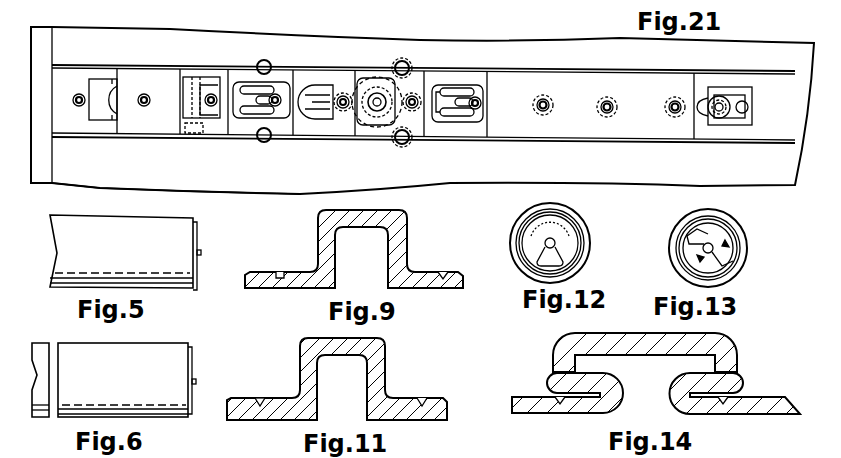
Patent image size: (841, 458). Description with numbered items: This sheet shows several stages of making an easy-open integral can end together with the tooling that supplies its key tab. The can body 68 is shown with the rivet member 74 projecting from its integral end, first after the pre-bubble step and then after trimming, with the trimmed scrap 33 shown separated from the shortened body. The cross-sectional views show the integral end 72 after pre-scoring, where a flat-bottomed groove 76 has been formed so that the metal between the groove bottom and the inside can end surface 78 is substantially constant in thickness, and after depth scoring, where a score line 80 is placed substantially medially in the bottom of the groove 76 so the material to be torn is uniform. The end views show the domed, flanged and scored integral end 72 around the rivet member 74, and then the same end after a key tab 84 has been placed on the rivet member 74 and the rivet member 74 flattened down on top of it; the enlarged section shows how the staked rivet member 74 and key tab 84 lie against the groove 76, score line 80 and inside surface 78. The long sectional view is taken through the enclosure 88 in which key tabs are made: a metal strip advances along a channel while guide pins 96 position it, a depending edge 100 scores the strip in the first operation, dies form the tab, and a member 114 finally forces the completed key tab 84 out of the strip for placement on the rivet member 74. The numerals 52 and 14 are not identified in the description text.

In FIG. 21, the channel rail body 52 is at (172, 42).
In FIG. 21, the depending edge 100 is at (102, 80).
In FIG. 21, the enclosure 88 is at (85, 168).
In FIG. 21, the guide pins 96 is at (540, 112).
In FIG. 21, the member 114 is at (712, 116).
In FIG. 5, the can body 68 is at (128, 226).
In FIG. 6, the can body 68 is at (150, 355).
In FIG. 9, the can body 68 is at (452, 277).
In FIG. 11, the can body 68 is at (432, 403).
In FIG. 14, the can body 68 is at (755, 403).
In FIG. 5, the rivet member 74 is at (203, 252).
In FIG. 6, the rivet member 74 is at (197, 382).
In FIG. 9, the rivet member 74 is at (403, 222).
In FIG. 11, the rivet member 74 is at (386, 344).
In FIG. 12, the rivet member 74 is at (556, 242).
In FIG. 13, the rivet member 74 is at (702, 248).
In FIG. 14, the rivet member 74 is at (630, 338).
In FIG. 6, the trimmed scrap 33 is at (38, 355).
In FIG. 9, the groove 76 is at (279, 271).
In FIG. 11, the groove 76 is at (260, 398).
In FIG. 12, the groove 76 is at (562, 258).
In FIG. 13, the groove 76 is at (721, 267).
In FIG. 14, the groove 76 is at (530, 410).
In FIG. 9, the inside can end surface 78 is at (302, 289).
In FIG. 11, the inside can end surface 78 is at (290, 421).
In FIG. 14, the inside can end surface 78 is at (585, 414).
In FIG. 11, the score line 80 is at (262, 408).
In FIG. 14, the score line 80 is at (558, 403).
In FIG. 12, the integral end 72 is at (570, 212).
In FIG. 13, the integral end 72 is at (745, 237).
In FIG. 13, the key tab 84 is at (707, 235).
In FIG. 14, the key tab 84 is at (737, 382).
In FIG. 13, the housing 14 is at (726, 243).